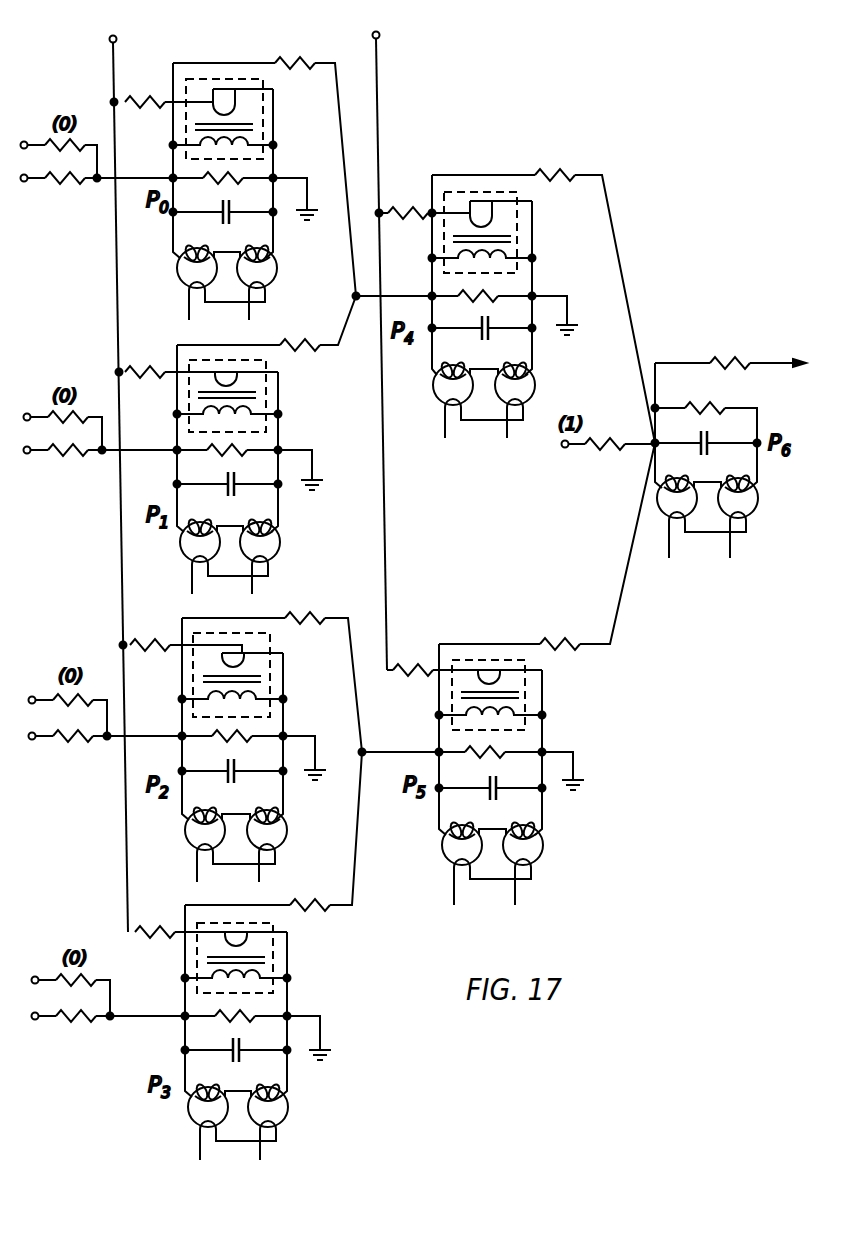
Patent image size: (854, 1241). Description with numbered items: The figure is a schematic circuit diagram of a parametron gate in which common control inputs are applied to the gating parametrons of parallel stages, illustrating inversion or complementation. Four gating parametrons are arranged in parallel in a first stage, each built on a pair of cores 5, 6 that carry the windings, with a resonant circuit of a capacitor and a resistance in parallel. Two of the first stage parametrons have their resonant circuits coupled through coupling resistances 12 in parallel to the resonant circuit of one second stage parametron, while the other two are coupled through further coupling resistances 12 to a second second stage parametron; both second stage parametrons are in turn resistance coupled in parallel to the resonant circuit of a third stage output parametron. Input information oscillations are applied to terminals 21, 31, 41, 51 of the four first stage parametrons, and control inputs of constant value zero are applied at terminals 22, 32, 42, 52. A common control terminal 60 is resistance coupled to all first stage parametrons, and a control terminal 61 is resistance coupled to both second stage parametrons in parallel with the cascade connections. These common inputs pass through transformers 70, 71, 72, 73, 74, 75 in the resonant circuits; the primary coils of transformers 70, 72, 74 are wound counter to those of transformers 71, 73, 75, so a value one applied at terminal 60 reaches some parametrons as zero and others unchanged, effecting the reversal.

The core 5 is at (179, 269).
The core 6 is at (277, 270).
The coupling resistance 12 is at (311, 53).
The input terminal 21 is at (59, 168).
The control input terminal 22 is at (56, 148).
The input terminal 31 is at (61, 467).
The control input terminal 32 is at (59, 420).
The input terminal 41 is at (65, 754).
The control input terminal 42 is at (65, 705).
The input terminal 51 is at (70, 1033).
The control input terminal 52 is at (69, 985).
The common control input terminal 60 is at (129, 472).
The control terminal 61 is at (391, 338).
The transformer 70 is at (263, 107).
The transformer 71 is at (266, 387).
The transformer 72 is at (265, 667).
The transformer 73 is at (273, 947).
The transformer 74 is at (520, 228).
The transformer 75 is at (527, 697).